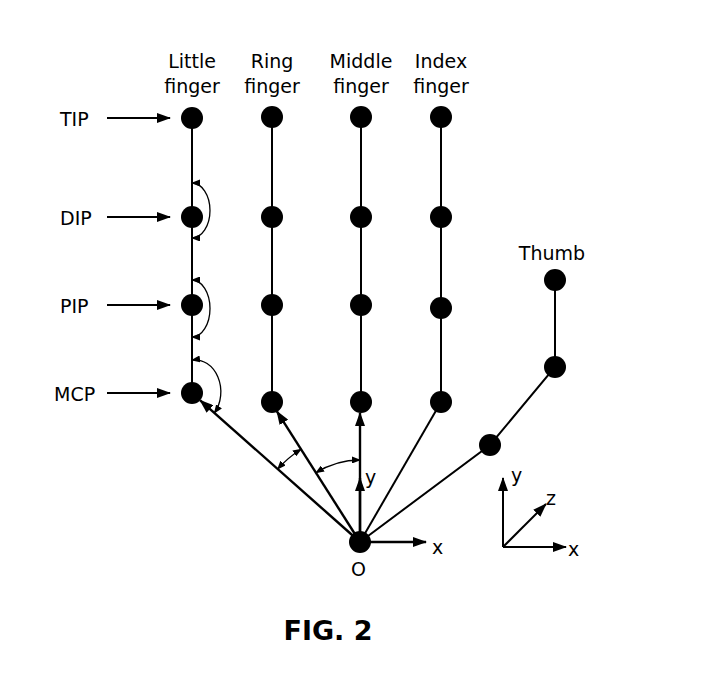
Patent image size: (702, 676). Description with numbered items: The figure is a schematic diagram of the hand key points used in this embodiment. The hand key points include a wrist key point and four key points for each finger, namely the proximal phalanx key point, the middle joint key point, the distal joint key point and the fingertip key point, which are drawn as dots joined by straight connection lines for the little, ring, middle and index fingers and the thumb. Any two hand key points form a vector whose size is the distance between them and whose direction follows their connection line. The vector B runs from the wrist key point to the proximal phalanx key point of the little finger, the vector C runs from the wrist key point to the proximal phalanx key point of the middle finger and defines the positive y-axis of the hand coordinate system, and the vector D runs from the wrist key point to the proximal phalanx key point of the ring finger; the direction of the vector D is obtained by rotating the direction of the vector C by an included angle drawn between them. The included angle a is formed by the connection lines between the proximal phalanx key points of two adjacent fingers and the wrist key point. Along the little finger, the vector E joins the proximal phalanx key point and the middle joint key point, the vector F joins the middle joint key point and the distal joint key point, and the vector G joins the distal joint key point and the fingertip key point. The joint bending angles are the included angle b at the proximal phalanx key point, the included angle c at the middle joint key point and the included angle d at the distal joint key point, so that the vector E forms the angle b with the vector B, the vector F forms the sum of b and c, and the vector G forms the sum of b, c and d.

The vector B is at (280, 471).
The vector C is at (349, 477).
The vector D is at (318, 475).
The vector E is at (179, 349).
The vector F is at (179, 261).
The vector G is at (179, 167).
The included angle a is at (283, 453).
The included angle b is at (211, 386).
The included angle c is at (207, 308).
The included angle d is at (209, 210).